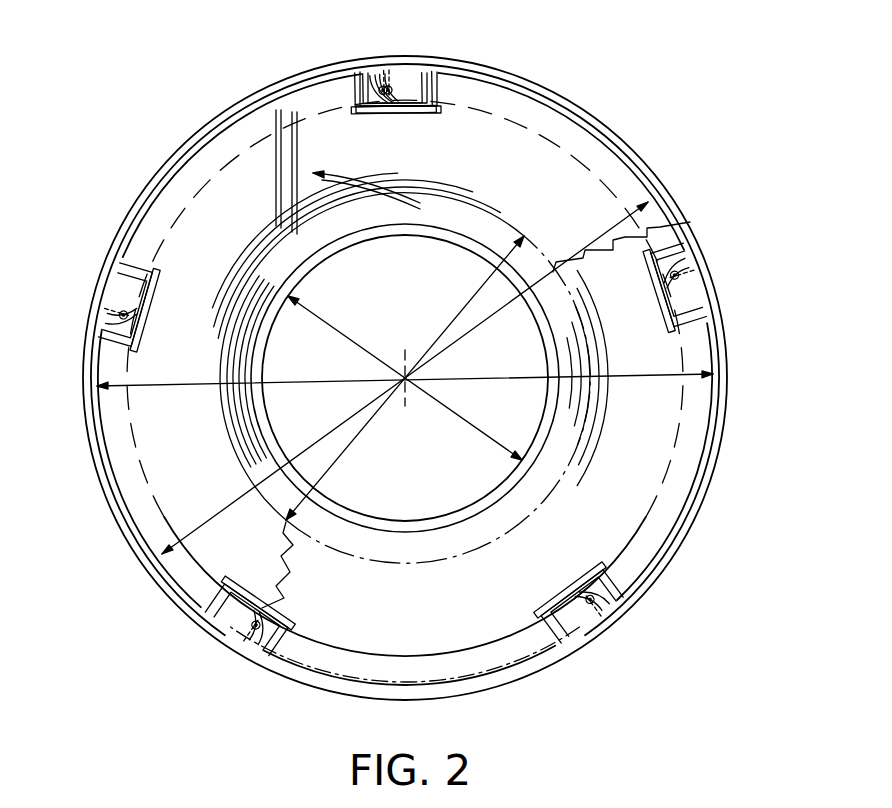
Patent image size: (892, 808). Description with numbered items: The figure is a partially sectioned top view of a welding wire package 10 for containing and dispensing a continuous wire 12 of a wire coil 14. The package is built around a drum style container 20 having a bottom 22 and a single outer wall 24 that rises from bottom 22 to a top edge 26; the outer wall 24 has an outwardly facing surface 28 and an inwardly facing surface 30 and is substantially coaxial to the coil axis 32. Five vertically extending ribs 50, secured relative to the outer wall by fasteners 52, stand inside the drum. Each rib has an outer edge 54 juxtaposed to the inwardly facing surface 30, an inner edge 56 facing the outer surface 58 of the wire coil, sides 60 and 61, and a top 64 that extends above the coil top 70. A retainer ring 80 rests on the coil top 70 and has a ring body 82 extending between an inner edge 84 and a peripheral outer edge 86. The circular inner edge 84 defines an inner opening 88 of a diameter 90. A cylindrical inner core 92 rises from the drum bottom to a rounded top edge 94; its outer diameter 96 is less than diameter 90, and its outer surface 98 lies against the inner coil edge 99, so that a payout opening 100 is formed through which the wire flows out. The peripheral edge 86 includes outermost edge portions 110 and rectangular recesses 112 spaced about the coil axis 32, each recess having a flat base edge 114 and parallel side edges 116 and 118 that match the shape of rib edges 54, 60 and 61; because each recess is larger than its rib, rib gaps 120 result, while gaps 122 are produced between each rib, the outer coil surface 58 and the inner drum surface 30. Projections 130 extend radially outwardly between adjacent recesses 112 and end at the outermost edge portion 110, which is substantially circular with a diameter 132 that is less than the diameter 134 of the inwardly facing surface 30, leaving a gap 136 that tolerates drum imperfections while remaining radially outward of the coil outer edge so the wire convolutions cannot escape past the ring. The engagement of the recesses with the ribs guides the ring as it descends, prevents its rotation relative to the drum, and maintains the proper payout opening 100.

The welding wire package 10 is at (572, 66).
The continuous wire 12 is at (353, 177).
The wire coil 14 is at (290, 296).
The drum style container 20 is at (634, 143).
The bottom 22 is at (437, 492).
The outer wall 24 is at (630, 125).
The top edge 26 is at (230, 118).
The outwardly facing surface 28 is at (115, 527).
The inwardly facing surface 30 is at (626, 173).
The coil axis 32 is at (420, 383).
The vertically extending ribs 50 is at (415, 82).
The fasteners 52 is at (596, 632).
The outer edge 54 is at (215, 632).
The inner edge 56 is at (135, 317).
The outer surface of the wire coil 58 is at (185, 175).
The side 60 is at (195, 615).
The side 61 is at (267, 655).
The top 64 is at (228, 652).
The coil top 70 is at (327, 227).
The retainer ring 80 is at (129, 460).
The ring body 82 is at (205, 225).
The inner edge 84 is at (503, 223).
The peripheral outer edge 86 is at (312, 82).
The inner opening 88 is at (237, 440).
The diameter 90 is at (330, 473).
The inner core 92 is at (460, 250).
The top edge 94 is at (330, 250).
The outer diameter 96 is at (457, 422).
The outer surface 98 is at (245, 350).
The inner coil edge 99 is at (257, 327).
The payout opening 100 is at (470, 218).
The outermost edge portions 110 is at (532, 92).
The recesses 112 is at (150, 278).
The base edge 114 is at (150, 298).
The side edge 116 is at (125, 255).
The side edge 118 is at (122, 338).
The rib gaps 120 is at (240, 590).
The gaps 122 is at (478, 662).
The projections 130 is at (255, 125).
The diameter 132 is at (240, 503).
The diameter 134 is at (186, 386).
The gap 136 is at (597, 115).